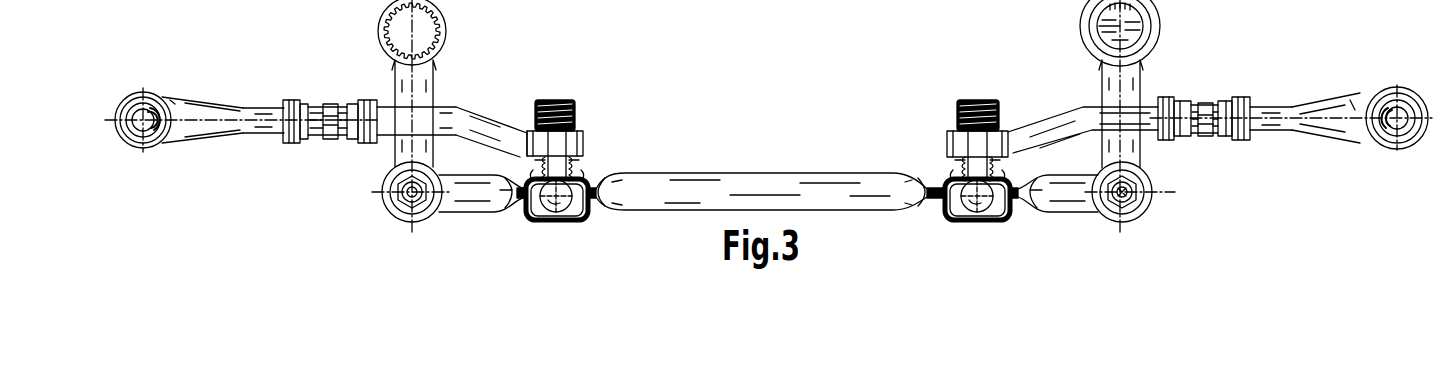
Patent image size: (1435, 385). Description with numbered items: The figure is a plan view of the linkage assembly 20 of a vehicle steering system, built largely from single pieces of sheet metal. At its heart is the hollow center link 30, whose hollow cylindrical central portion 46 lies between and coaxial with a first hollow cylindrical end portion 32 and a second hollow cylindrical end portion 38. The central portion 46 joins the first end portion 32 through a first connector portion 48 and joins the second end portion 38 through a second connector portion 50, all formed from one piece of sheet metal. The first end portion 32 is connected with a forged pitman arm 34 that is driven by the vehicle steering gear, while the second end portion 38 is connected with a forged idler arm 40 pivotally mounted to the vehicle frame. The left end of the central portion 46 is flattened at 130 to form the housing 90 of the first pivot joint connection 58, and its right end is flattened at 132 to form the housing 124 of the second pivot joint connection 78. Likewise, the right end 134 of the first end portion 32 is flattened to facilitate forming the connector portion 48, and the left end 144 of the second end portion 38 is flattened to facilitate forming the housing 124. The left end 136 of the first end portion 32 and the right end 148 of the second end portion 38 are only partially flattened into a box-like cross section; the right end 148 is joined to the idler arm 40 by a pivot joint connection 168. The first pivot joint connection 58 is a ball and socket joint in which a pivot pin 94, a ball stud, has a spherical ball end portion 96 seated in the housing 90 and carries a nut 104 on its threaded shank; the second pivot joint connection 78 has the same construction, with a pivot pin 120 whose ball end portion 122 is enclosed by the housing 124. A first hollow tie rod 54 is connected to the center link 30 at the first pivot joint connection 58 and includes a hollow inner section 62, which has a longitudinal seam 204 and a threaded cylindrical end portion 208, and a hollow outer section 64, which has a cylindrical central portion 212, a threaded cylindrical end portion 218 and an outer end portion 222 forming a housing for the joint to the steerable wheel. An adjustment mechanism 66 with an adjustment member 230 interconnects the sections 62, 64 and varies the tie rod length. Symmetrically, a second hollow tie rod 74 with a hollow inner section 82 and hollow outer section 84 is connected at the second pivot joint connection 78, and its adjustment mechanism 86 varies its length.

The linkage assembly 20 is at (858, 211).
The center link 30 is at (773, 172).
The first hollow cylindrical end portion 32 is at (458, 203).
The pitman arm 34 is at (440, 10).
The second hollow cylindrical end portion 38 is at (1077, 202).
The idler arm 40 is at (1144, 77).
The hollow cylindrical central portion 46 is at (722, 195).
The first connector portion 48 is at (540, 219).
The second connector portion 50 is at (968, 221).
The first hollow tie rod 54 is at (504, 101).
The first pivot joint connection 58 is at (588, 110).
The hollow inner section 62 is at (487, 100).
The hollow outer section 64 is at (226, 100).
The adjustment mechanism 66 is at (329, 99).
The second hollow tie rod 74 is at (1030, 112).
The second pivot joint connection 78 is at (940, 132).
The hollow inner section 82 is at (1055, 116).
The hollow outer section 84 is at (1302, 128).
The adjustment mechanism 86 is at (1203, 134).
The housing 90 is at (560, 221).
The pivot pin 94 is at (583, 170).
The ball end portion 96 is at (582, 205).
The nut 104 is at (567, 103).
The pivot pin 120 is at (960, 160).
The ball end portion 122 is at (962, 202).
The housing 124 is at (987, 221).
The flattened left end portion 130 is at (594, 198).
The flattened right end portion 132 is at (927, 199).
The right end 134 is at (517, 201).
The left end 136 is at (398, 228).
The flattened left end 144 is at (1015, 197).
The right end 148 is at (1138, 209).
The pivot joint connection 168 is at (1153, 197).
The seam 204 is at (452, 106).
The cylindrical end portion 208 is at (387, 106).
The central portion 212 is at (223, 128).
The cylindrical end portion 218 is at (258, 136).
The outer end portion 222 is at (135, 145).
The adjustment member 230 is at (330, 136).